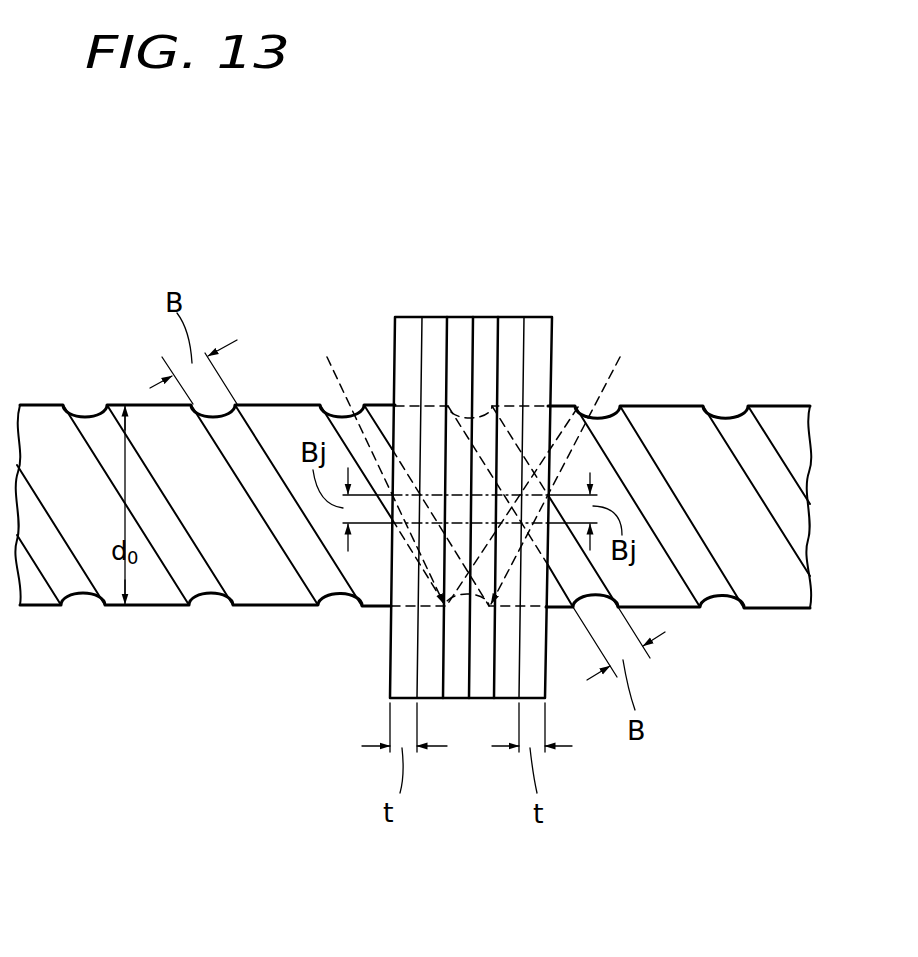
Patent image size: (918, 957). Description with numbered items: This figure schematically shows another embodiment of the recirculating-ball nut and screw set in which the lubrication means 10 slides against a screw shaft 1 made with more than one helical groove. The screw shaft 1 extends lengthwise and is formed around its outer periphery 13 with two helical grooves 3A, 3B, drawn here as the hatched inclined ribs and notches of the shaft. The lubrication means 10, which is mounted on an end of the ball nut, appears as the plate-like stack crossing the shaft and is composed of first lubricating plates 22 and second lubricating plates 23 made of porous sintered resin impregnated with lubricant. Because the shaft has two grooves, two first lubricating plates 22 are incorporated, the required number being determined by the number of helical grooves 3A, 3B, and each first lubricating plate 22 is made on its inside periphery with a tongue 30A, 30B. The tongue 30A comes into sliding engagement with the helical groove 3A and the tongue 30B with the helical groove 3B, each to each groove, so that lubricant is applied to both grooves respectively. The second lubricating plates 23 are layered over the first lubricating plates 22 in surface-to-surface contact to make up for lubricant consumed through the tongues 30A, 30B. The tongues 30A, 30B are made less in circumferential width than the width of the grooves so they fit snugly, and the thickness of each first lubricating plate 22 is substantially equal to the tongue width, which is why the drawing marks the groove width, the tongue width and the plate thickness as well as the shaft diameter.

The screw shaft 1 is at (677, 423).
The helical groove 3A is at (373, 432).
The helical groove 3B is at (757, 452).
The lubrication means 10 is at (521, 316).
The outer periphery 13 is at (252, 567).
The first lubricating plate 22 is at (410, 317).
The second lubricating plate 23 is at (510, 327).
The tongue 30A is at (372, 464).
The tongue 30B is at (567, 465).